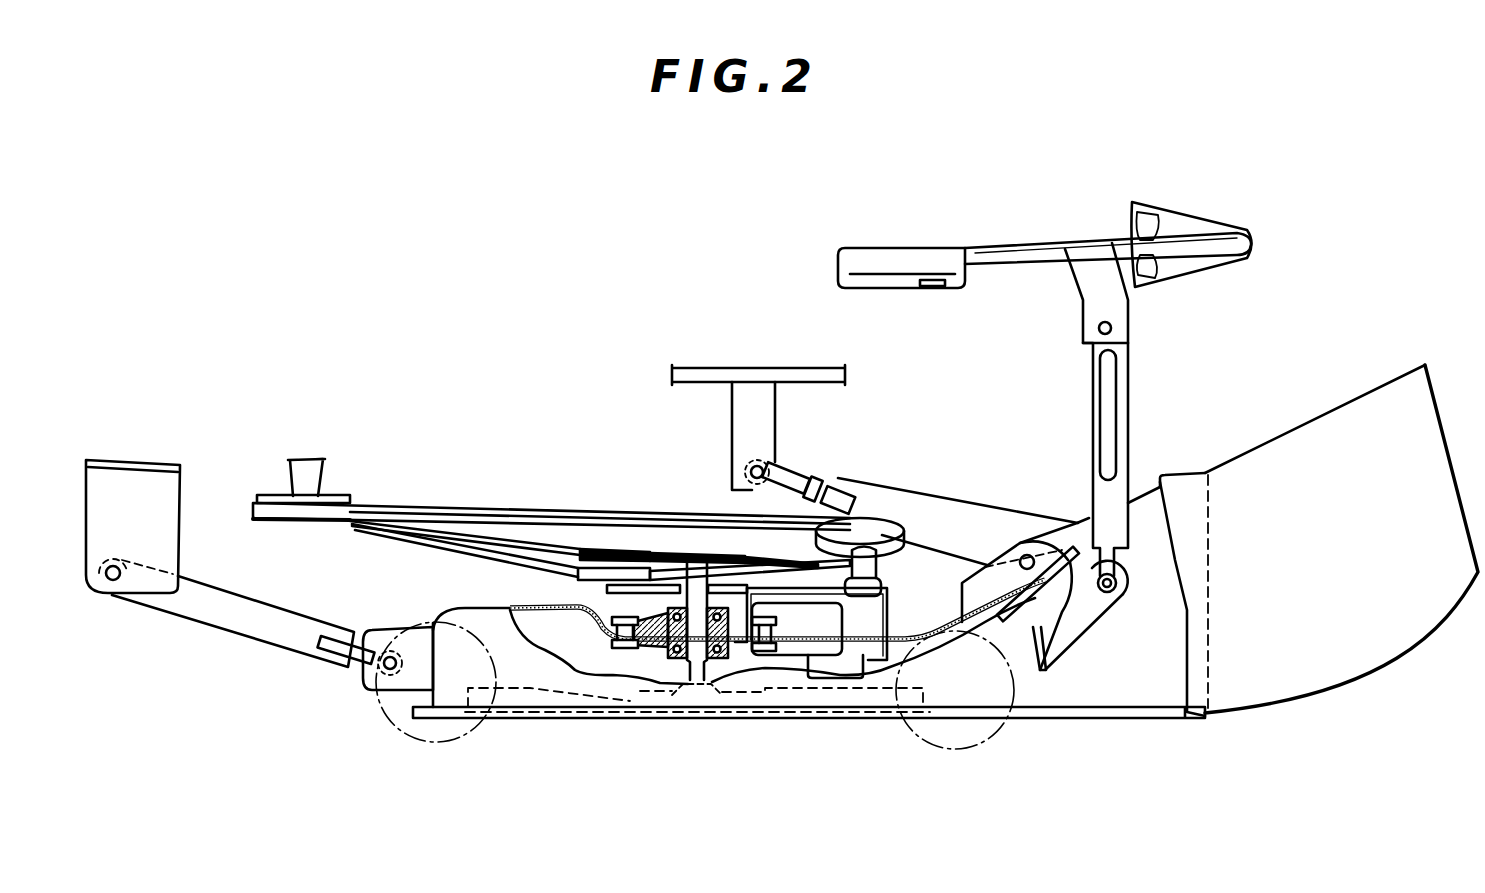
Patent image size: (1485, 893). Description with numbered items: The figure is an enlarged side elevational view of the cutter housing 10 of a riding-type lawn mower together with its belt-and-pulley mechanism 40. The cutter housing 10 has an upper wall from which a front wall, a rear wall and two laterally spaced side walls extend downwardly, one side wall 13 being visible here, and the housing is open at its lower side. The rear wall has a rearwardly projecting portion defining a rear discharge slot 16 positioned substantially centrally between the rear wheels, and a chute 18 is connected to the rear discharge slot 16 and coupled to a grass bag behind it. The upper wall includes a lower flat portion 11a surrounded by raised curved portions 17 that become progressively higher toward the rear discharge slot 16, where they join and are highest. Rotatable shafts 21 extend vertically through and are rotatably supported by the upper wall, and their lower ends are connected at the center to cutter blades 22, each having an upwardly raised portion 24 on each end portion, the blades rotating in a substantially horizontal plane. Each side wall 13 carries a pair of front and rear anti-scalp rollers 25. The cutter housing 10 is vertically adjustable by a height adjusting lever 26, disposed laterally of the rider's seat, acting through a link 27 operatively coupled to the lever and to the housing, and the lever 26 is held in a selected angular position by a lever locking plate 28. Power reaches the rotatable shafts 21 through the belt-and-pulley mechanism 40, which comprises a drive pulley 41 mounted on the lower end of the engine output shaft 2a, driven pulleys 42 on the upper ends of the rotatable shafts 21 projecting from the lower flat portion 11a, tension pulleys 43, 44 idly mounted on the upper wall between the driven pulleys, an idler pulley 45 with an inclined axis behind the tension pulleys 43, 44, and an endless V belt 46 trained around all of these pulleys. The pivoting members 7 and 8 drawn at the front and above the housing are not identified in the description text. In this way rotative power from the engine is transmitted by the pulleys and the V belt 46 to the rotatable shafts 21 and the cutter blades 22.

The output shaft 2a is at (290, 470).
The pivot arm 7 is at (244, 626).
The lever 8 is at (937, 497).
The cutter housing 10 is at (1101, 719).
The lower flat portion 11a is at (786, 646).
The side wall 13 is at (1038, 693).
The rear discharge slot 16 is at (1211, 610).
The curved portion 17 is at (1062, 528).
The chute 18 is at (1382, 633).
The rotatable shaft 21 is at (672, 642).
The cutter blade 22 is at (797, 720).
The upwardly raised portion 24 is at (526, 688).
The anti-scalp roller 25 is at (414, 738).
The height adjusting lever 26 is at (876, 254).
The link 27 is at (1130, 386).
The lever locking plate 28 is at (1133, 203).
The belt-and-pulley mechanism 40 is at (628, 500).
The drive pulley 41 is at (300, 522).
The driven pulley 42 is at (695, 550).
The tension pulley 43 is at (575, 578).
The tension pulley 44 is at (772, 600).
The idler pulley 45 is at (885, 552).
The endless V belt 46 is at (465, 558).